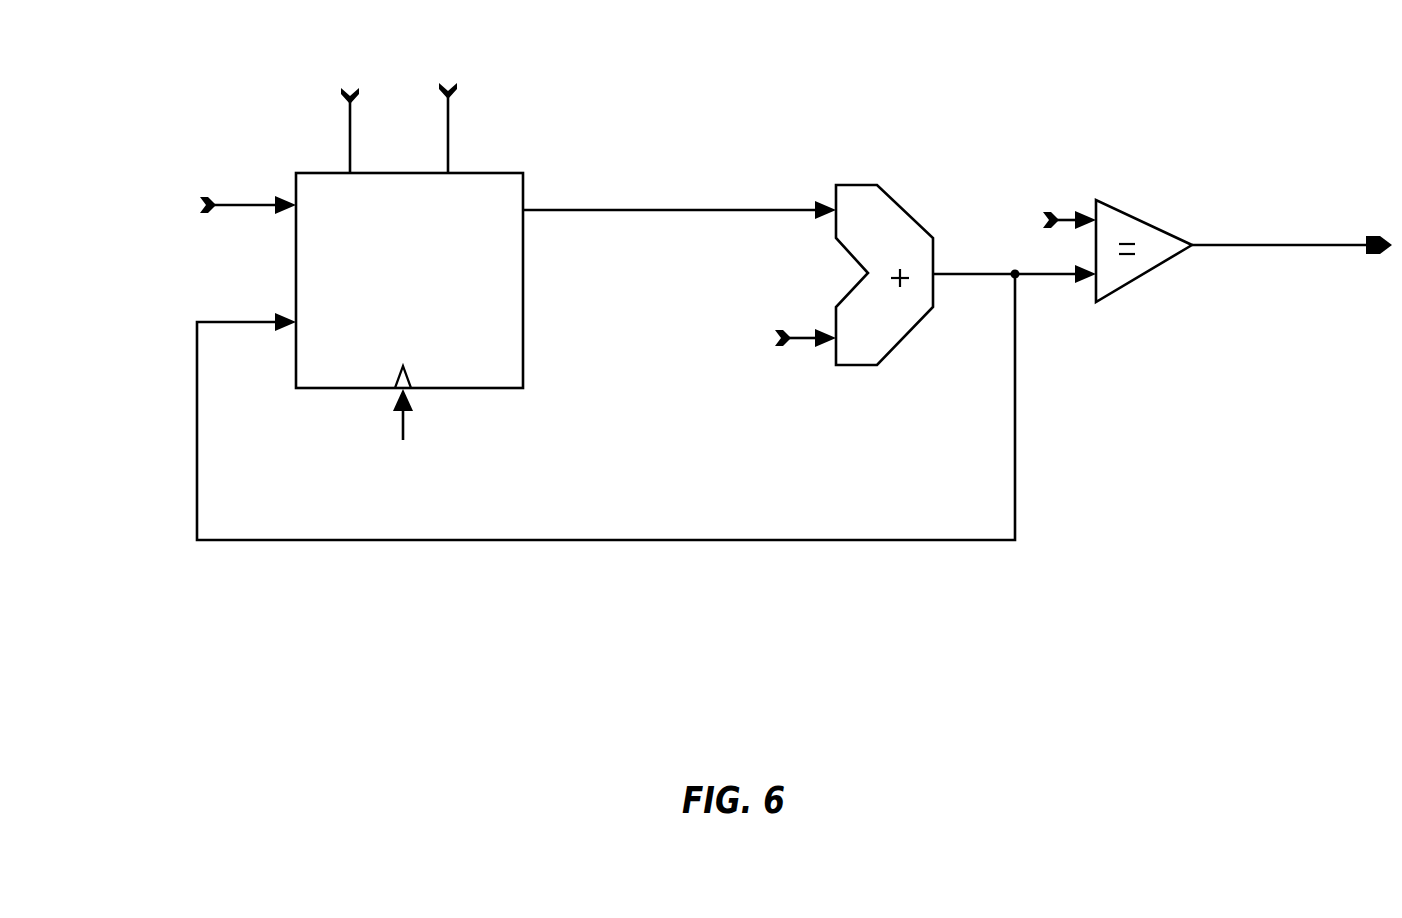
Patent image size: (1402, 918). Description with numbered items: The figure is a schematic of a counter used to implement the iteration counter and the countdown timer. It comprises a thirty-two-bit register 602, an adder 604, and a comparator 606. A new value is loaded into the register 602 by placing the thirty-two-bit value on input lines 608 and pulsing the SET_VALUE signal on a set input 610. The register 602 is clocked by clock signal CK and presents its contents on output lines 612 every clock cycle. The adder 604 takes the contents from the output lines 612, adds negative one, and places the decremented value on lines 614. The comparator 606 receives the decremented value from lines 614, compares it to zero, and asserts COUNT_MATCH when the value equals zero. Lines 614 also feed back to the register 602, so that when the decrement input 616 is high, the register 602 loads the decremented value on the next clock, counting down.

The register 602 is at (420, 337).
The adder 604 is at (883, 188).
The comparator 606 is at (1161, 194).
The input lines 608 is at (295, 203).
The set input 610 is at (353, 173).
The output lines 612 is at (698, 212).
The lines 614 is at (1022, 278).
The decrement input 616 is at (460, 173).